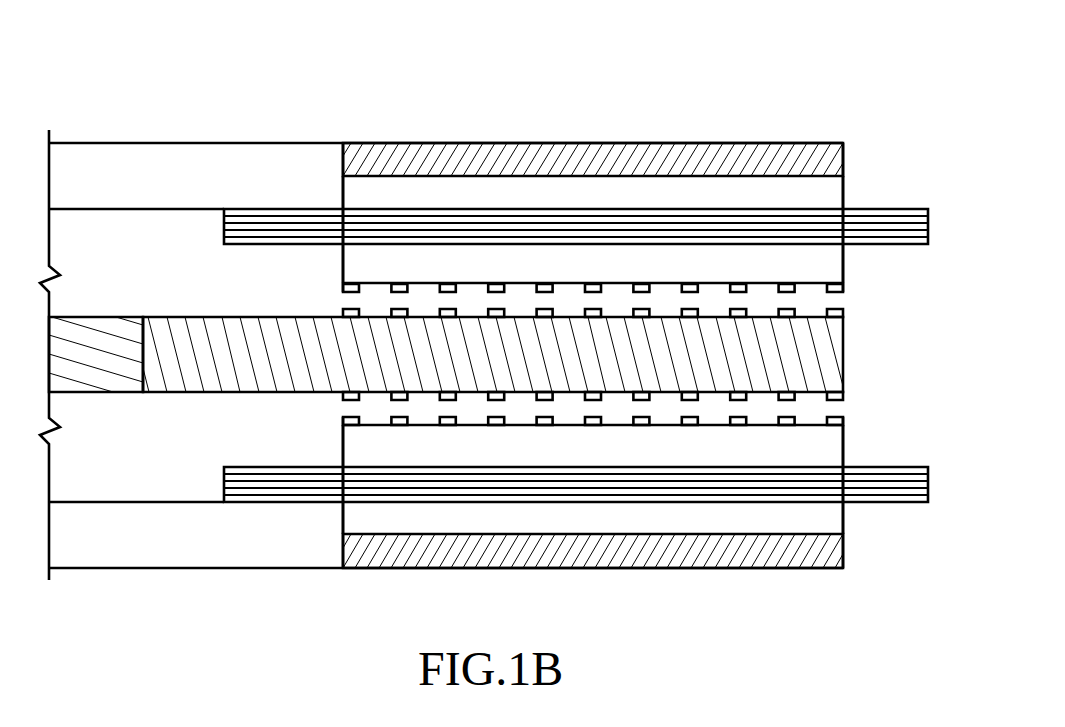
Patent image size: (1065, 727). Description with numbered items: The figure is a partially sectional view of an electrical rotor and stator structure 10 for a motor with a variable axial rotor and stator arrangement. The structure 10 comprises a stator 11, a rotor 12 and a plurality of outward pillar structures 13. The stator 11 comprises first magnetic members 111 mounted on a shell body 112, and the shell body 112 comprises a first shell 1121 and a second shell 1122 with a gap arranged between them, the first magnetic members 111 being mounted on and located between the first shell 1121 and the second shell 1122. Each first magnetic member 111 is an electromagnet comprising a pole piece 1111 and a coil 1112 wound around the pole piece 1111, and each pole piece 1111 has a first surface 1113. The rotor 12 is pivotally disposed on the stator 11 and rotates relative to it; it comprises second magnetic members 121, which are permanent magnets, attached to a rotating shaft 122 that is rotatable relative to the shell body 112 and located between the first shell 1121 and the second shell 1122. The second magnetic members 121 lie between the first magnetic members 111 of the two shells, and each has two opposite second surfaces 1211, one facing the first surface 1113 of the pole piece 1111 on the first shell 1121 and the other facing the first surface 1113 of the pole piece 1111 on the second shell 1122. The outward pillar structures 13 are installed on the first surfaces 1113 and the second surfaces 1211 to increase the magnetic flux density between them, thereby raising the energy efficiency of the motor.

The electrical rotor and stator structure 10 is at (1052, 41).
The stator 11 is at (877, 110).
The first magnetic member 111 is at (614, 355).
The pole piece 1111 is at (828, 263).
The coil 1112 is at (930, 226).
The first surface 1113 is at (808, 290).
The shell body 112 is at (593, 352).
The first shell 1121 is at (616, 143).
The second shell 1122 is at (620, 570).
The rotor 12 is at (486, 328).
The second magnetic member 121 is at (820, 358).
The rotating shaft 122 is at (117, 316).
The second surface 1211 is at (352, 311).
The outward pillar structure 13 is at (343, 289).